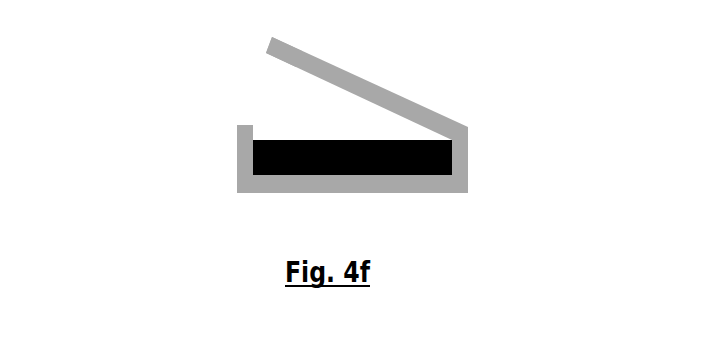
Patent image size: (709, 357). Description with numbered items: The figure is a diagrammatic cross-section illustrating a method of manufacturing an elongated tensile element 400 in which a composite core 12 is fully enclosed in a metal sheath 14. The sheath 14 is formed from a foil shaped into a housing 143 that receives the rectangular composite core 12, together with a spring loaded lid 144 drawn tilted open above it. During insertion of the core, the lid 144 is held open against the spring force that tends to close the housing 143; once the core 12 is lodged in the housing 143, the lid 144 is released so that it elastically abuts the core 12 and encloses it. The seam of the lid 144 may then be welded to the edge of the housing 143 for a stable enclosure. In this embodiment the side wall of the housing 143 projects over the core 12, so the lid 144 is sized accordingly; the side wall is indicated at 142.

The elongated tensile element 400 is at (370, 153).
The metal sheath 14 is at (385, 94).
The spring loaded lid 144 is at (303, 58).
The side wall of tray 142 is at (237, 106).
The housing 143 is at (271, 190).
The composite core 12 is at (440, 177).